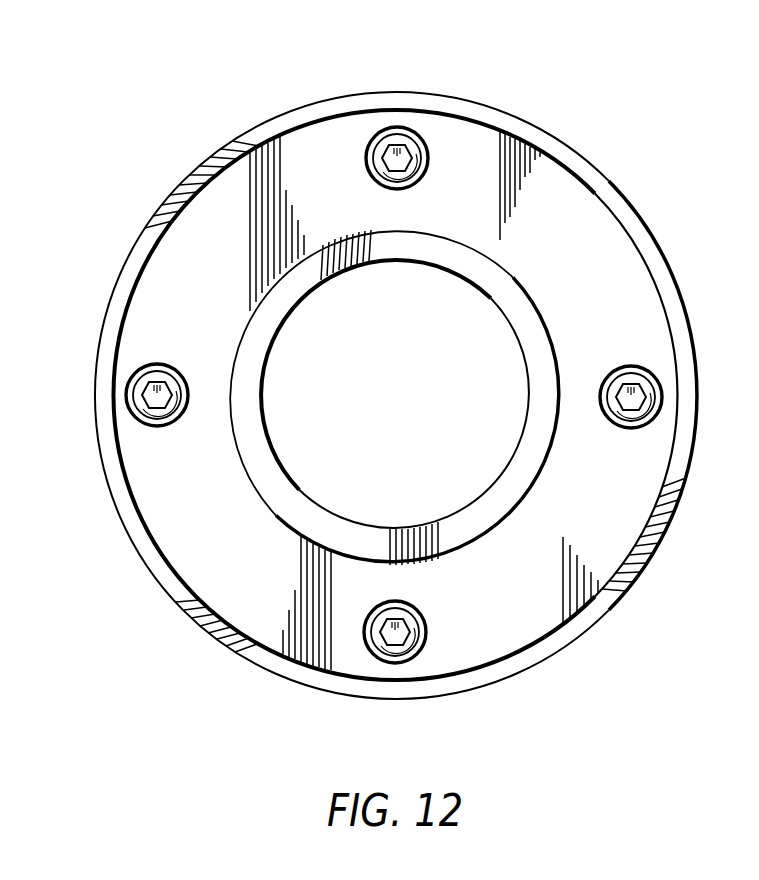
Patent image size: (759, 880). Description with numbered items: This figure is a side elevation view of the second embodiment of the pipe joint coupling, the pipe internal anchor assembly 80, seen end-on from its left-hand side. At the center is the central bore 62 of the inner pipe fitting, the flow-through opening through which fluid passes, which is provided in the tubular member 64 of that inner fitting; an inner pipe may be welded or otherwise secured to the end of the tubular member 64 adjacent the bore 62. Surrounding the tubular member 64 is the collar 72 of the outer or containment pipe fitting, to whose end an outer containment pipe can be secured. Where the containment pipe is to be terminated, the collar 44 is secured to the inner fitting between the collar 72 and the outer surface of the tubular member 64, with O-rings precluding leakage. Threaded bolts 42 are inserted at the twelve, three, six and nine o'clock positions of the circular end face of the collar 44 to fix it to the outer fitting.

The threaded bolts 42 is at (419, 174).
The collar 44 is at (587, 538).
The central bore 62 is at (505, 470).
The tubular member 64 is at (533, 309).
The collar 72 is at (491, 112).
The pipe internal anchor assembly 80 is at (672, 247).